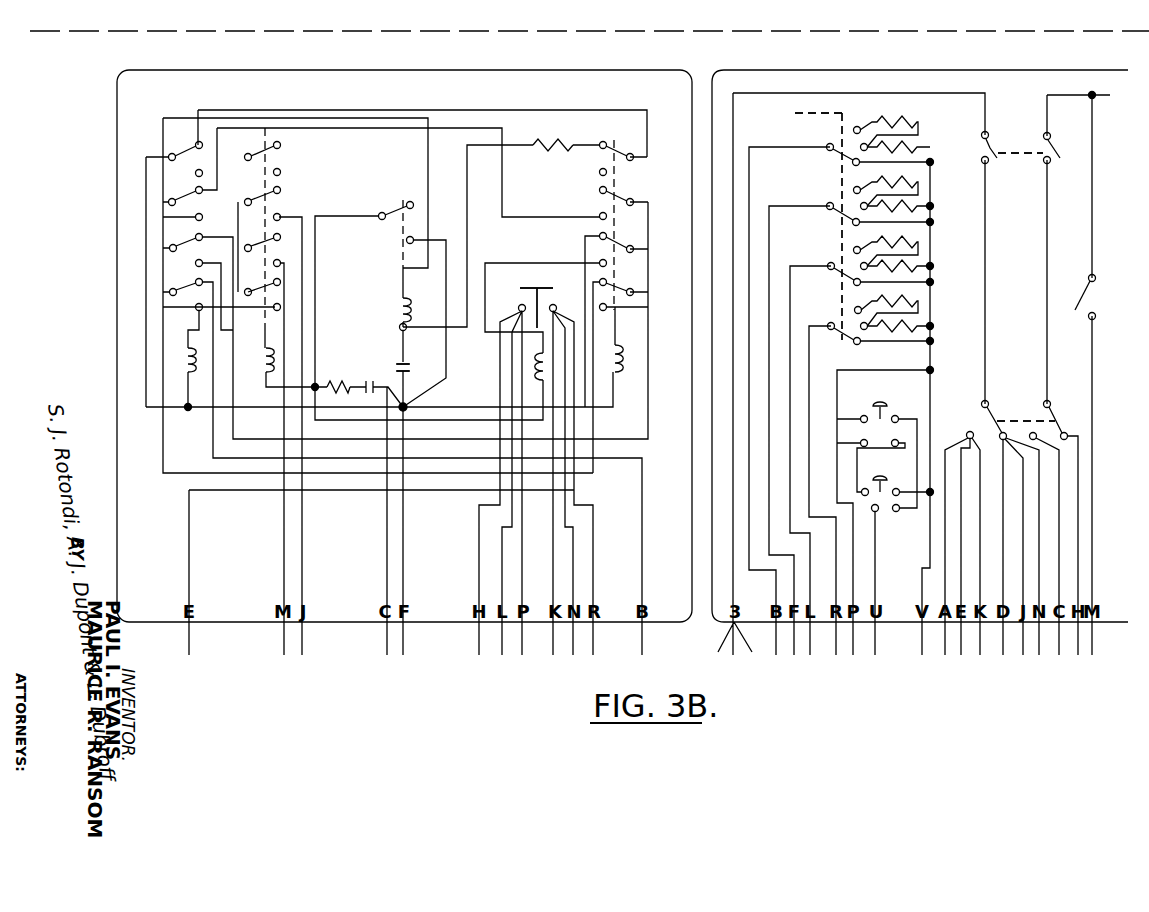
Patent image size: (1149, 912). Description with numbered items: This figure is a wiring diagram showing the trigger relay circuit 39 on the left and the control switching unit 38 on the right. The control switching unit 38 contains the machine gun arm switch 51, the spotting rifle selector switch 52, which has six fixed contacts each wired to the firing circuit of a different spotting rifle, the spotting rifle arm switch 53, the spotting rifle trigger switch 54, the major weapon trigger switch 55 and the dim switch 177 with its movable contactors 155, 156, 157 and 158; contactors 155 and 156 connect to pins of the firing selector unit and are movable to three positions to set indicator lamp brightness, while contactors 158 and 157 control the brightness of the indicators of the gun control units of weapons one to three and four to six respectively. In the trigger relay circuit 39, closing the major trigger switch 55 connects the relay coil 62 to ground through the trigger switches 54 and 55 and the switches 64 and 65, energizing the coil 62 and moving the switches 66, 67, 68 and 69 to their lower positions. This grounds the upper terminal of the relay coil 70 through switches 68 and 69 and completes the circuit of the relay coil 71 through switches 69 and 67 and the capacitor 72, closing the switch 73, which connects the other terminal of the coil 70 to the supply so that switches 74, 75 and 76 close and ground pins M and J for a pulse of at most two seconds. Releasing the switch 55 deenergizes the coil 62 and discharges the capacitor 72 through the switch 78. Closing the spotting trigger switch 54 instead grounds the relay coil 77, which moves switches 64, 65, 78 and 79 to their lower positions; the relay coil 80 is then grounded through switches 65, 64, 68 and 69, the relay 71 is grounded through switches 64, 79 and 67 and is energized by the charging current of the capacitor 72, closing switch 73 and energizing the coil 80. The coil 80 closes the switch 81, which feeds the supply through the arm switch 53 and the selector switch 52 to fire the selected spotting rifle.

The trigger relay circuit 39 is at (605, 70).
The control switching unit 38 is at (1050, 70).
The dim switch 177 is at (822, 112).
The switch 66 is at (182, 152).
The switch 67 is at (178, 200).
The switch 68 is at (176, 242).
The switch 69 is at (175, 290).
The relay coil 62 is at (180, 360).
The relay coil 70 is at (272, 354).
The switch 74 is at (262, 200).
The switch 75 is at (257, 243).
The switch 76 is at (263, 286).
The switch 73 is at (388, 213).
The relay coil 71 is at (406, 312).
The capacitor 72 is at (406, 376).
The switch 81 is at (535, 288).
The relay coil 80 is at (540, 372).
The switch 78 is at (626, 135).
The switch 79 is at (618, 196).
The switch 65 is at (618, 242).
The switch 64 is at (618, 288).
The relay coil 77 is at (622, 364).
The movable contactor 158 is at (840, 154).
The movable contactor 157 is at (840, 214).
The movable contactor 156 is at (840, 274).
The movable contactor 155 is at (843, 334).
The spotting rifle arm switch 53 is at (988, 146).
The spotting rifle selector switch 52 is at (993, 417).
The machine gun arm switch 51 is at (1082, 297).
The spotting rifle trigger switch 54 is at (868, 426).
The major weapon trigger switch 55 is at (882, 496).